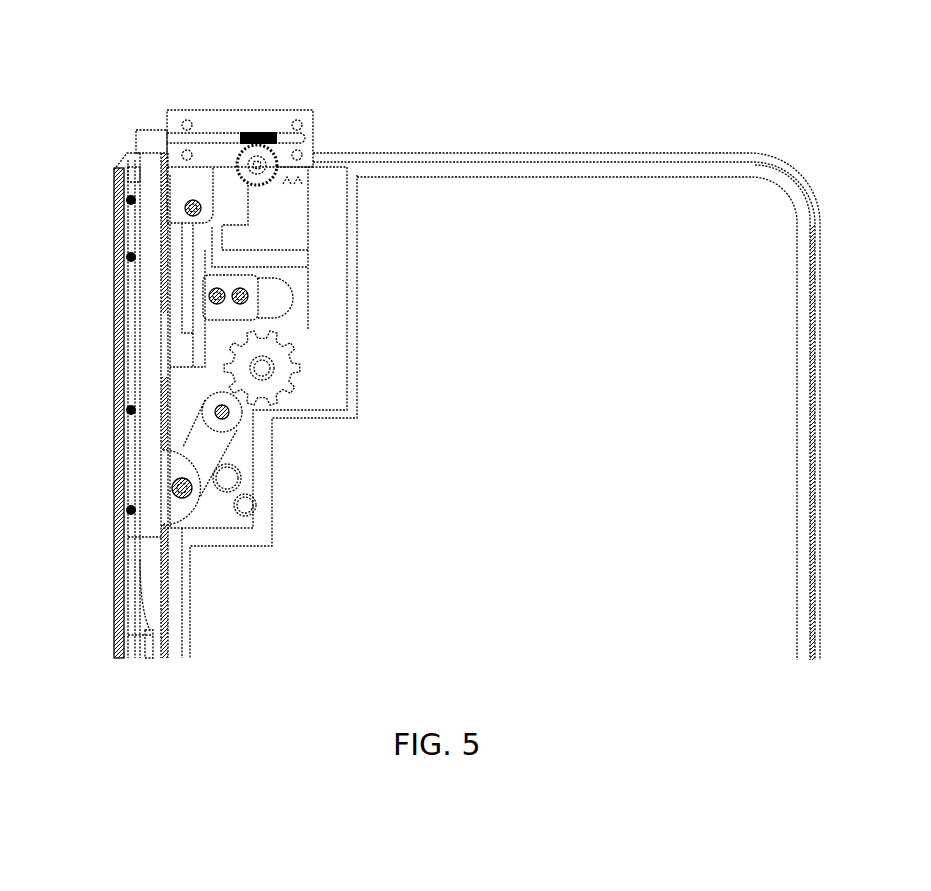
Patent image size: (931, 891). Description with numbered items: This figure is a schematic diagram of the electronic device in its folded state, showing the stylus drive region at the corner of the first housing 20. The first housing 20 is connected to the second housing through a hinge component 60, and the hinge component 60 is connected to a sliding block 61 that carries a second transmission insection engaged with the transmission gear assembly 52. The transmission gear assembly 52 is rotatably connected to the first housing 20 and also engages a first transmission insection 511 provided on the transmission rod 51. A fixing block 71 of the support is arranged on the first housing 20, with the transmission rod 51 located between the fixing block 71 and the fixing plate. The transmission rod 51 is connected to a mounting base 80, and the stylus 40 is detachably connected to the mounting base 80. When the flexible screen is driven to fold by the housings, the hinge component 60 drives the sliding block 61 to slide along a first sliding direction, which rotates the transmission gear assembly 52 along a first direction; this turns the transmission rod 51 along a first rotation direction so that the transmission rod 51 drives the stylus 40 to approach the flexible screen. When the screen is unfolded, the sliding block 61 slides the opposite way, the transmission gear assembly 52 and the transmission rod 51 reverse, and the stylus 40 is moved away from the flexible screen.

The first housing 20 is at (815, 248).
The stylus 40 is at (143, 227).
The transmission rod 51 is at (207, 133).
The first transmission insection 511 is at (260, 132).
The transmission gear assembly 52 is at (265, 172).
The hinge component 60 is at (258, 318).
The sliding block 61 is at (268, 232).
The fixing block 71 is at (300, 115).
The mounting base 80 is at (145, 130).